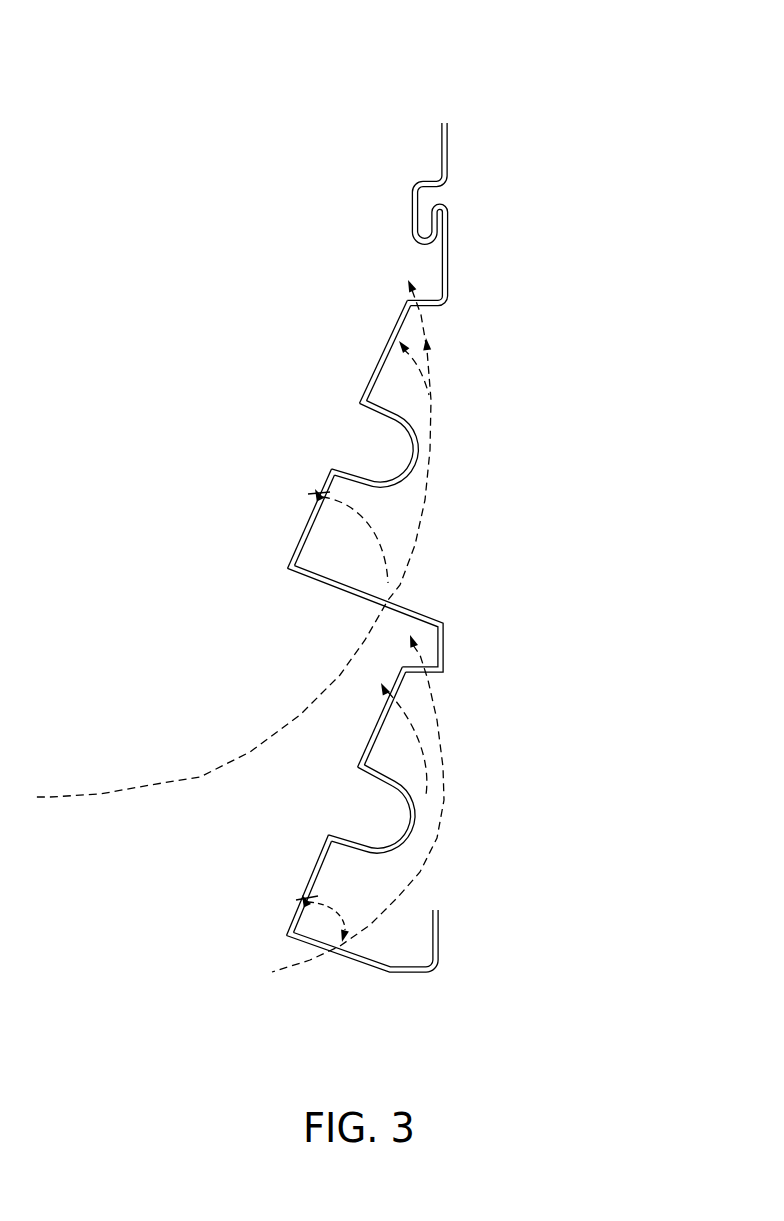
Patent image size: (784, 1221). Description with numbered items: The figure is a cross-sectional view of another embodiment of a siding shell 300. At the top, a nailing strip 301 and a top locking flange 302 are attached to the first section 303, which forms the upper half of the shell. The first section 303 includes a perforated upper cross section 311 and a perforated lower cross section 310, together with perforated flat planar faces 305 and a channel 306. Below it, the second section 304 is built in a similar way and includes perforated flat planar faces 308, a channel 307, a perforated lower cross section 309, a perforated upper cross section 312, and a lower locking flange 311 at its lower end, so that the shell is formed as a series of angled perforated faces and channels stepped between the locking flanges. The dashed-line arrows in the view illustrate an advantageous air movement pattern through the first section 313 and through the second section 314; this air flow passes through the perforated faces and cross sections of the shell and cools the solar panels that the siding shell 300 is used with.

The siding shell 300 is at (160, 49).
The nailing strip 301 is at (441, 146).
The top locking flange 302 is at (414, 238).
The first section 303 is at (477, 478).
The second section 304 is at (477, 853).
The perforated flat planar faces 305 is at (386, 345).
The channel 306 is at (410, 462).
The channel 307 is at (408, 826).
The perforated flat planar faces 308 is at (384, 704).
The perforated lower cross section 309 is at (345, 958).
The perforated lower cross section 310 is at (398, 600).
The perforated upper cross section / lower locking flange 311 is at (415, 300).
The perforated upper cross section 312 is at (432, 682).
The air movement pattern through the first section 313 is at (150, 783).
The air movement pattern through the second section 314 is at (303, 963).